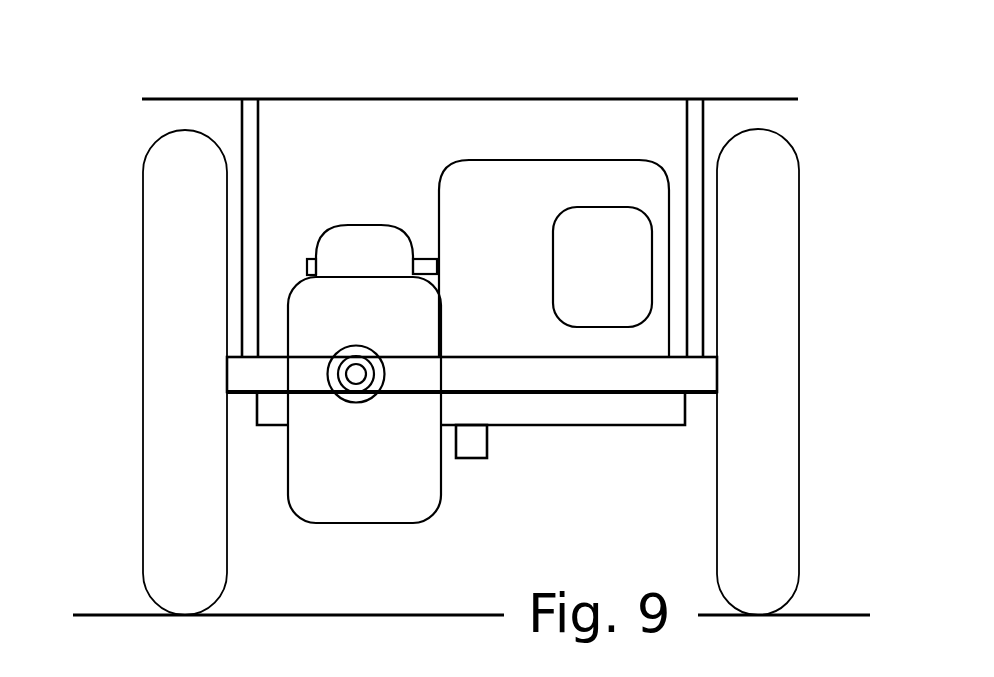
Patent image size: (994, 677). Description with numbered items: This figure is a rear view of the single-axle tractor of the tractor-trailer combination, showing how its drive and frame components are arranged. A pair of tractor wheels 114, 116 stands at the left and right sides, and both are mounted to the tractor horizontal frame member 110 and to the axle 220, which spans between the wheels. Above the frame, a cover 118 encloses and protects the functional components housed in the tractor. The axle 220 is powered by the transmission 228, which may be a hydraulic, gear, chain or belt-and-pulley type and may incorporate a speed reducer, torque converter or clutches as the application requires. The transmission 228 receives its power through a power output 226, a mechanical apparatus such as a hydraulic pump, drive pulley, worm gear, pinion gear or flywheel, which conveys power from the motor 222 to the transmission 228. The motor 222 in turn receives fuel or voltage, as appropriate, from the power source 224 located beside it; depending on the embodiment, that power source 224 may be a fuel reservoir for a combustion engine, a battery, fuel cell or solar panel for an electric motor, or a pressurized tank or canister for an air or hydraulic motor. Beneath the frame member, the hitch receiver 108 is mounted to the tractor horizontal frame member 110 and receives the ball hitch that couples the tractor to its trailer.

The hitch receiver 108 is at (482, 462).
The tractor horizontal frame member 110 is at (258, 425).
The tractor wheel 114 is at (142, 400).
The tractor wheel 116 is at (797, 283).
The cover 118 is at (362, 99).
The axle 220 is at (530, 357).
The motor 222 is at (553, 159).
The power source 224 is at (602, 207).
The power output 226 is at (392, 227).
The transmission 228 is at (365, 523).